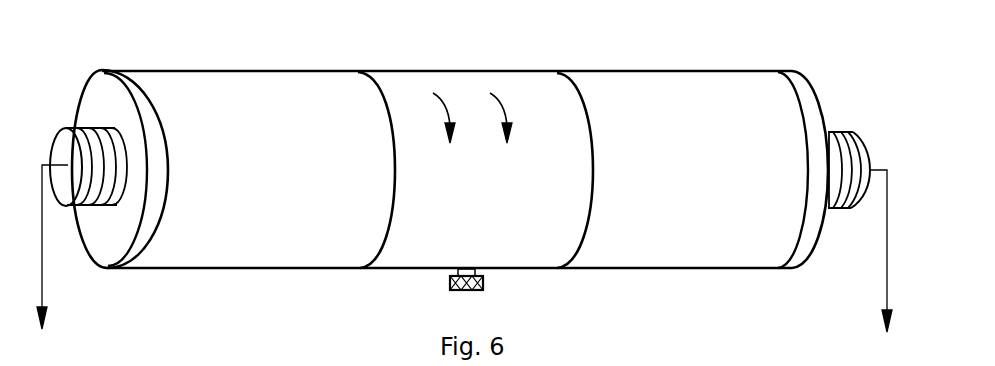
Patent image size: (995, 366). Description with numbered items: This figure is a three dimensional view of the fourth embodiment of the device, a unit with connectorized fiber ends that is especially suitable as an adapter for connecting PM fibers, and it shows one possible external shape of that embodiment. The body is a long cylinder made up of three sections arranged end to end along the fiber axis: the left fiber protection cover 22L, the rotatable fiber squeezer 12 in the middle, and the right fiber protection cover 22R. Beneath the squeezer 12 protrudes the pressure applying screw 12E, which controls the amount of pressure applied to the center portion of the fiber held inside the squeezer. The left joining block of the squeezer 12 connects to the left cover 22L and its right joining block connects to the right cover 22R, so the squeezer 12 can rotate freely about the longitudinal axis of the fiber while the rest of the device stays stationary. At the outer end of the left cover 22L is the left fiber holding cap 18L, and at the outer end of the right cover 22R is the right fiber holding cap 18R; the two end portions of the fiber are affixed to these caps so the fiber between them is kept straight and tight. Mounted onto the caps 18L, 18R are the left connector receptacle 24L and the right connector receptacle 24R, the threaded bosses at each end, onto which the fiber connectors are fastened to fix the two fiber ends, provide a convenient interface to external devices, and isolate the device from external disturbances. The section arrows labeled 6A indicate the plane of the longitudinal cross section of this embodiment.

The fiber squeezer 12 is at (396, 90).
The pressure applying screw 12E is at (485, 279).
The left fiber holding cap 18L is at (122, 243).
The right fiber holding cap 18R is at (812, 240).
The left fiber protection cover 22L is at (247, 84).
The right fiber protection cover 22R is at (655, 92).
The left connector receptacle 24L is at (78, 125).
The right connector receptacle 24R is at (845, 120).
The section view indicator 6A is at (464, 263).